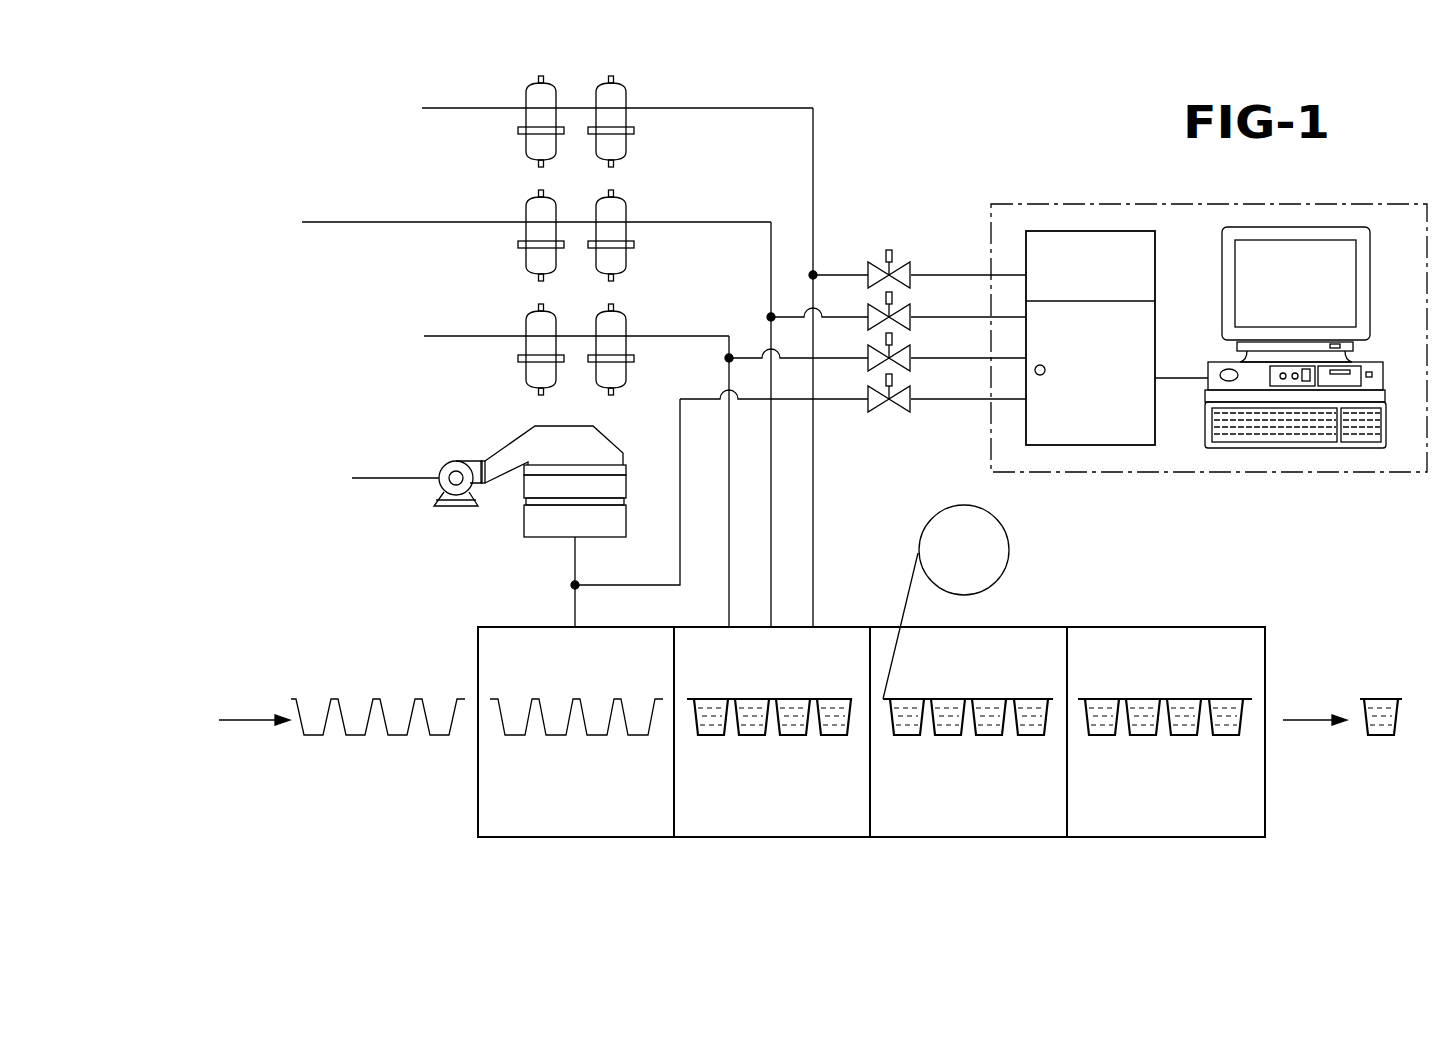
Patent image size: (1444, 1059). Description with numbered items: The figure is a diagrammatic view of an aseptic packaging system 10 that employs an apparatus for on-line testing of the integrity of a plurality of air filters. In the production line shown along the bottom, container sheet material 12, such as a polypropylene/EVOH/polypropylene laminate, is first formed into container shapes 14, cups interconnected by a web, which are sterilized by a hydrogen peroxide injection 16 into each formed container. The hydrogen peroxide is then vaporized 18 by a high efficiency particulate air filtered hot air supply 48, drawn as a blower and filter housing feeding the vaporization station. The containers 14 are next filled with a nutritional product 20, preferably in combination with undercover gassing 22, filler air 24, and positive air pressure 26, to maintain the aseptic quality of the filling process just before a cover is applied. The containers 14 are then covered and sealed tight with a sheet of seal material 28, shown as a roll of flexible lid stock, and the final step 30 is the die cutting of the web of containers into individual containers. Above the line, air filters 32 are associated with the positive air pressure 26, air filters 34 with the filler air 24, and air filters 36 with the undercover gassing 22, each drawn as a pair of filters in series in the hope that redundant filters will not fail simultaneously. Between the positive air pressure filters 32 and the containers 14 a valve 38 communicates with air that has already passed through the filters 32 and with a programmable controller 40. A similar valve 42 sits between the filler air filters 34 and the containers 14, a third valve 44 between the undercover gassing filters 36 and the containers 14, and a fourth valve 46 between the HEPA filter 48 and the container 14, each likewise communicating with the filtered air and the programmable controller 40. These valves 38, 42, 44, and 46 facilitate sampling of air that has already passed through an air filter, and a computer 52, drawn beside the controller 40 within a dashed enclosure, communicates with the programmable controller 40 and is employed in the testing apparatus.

The aseptic packaging system 10 is at (1271, 584).
The container sheet material 12 is at (279, 670).
The container shapes 14 is at (316, 735).
The hydrogen peroxide injection 16 is at (354, 837).
The hydrogen peroxide vaporization 18 is at (549, 859).
The nutritional product 20 is at (708, 699).
The undercover gassing 22 is at (238, 372).
The filler air 24 is at (238, 255).
The positive air pressure 26 is at (238, 140).
The seal material 28 is at (895, 652).
The final step 30 is at (1139, 859).
The air filters 32 is at (651, 77).
The air filters 34 is at (651, 190).
The air filters 36 is at (650, 304).
The valve 38 is at (908, 269).
The programmable controller 40 is at (1071, 225).
The valve 42 is at (911, 312).
The valve 44 is at (911, 353).
The valve 46 is at (911, 394).
The HEPA filtered hot air supply 48 is at (241, 556).
The computer 52 is at (1290, 250).